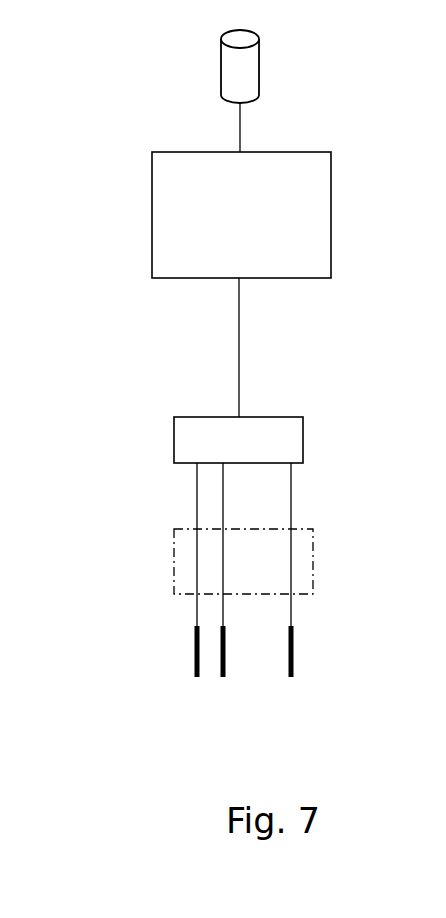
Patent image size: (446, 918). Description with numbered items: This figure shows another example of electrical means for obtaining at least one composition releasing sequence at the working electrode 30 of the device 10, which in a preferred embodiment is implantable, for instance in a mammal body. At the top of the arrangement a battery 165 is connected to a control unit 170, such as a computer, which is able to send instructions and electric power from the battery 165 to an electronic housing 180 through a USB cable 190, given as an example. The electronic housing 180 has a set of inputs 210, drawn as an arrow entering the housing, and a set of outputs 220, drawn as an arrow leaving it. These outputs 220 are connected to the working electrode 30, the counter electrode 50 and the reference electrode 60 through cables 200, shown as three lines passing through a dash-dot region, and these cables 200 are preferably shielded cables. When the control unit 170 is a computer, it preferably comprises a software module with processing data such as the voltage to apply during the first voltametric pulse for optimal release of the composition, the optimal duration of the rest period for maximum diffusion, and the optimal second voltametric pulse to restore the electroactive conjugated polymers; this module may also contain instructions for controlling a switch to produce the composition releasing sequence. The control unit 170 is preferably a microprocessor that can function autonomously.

The device 10 is at (130, 124).
The battery 165 is at (259, 70).
The control unit 170 is at (241, 215).
The electronic housing 180 is at (238, 440).
The USB cable 190 is at (239, 330).
The cables 200 is at (313, 556).
The set of inputs 210 is at (265, 408).
The set of outputs 220 is at (302, 475).
The working electrode 30 is at (194, 647).
The counter electrode 50 is at (226, 655).
The reference electrode 60 is at (293, 650).